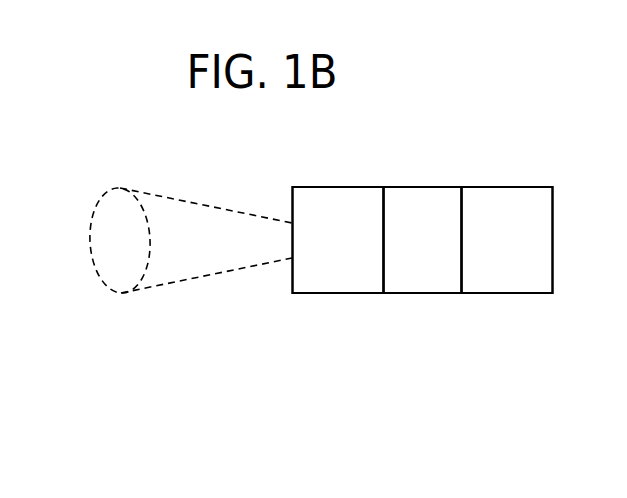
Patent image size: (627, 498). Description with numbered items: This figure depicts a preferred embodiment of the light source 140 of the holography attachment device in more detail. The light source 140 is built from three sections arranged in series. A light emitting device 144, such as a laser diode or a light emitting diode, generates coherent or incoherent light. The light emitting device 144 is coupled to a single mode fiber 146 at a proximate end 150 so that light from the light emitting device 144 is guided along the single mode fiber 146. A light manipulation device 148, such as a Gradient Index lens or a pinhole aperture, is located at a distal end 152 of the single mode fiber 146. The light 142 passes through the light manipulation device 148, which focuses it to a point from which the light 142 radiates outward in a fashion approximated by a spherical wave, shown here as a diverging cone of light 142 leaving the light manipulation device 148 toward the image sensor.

The light source 140 is at (503, 160).
The light 142 is at (203, 233).
The light emitting device 144 is at (512, 253).
The single mode fiber 146 is at (423, 260).
The light manipulation device 148 is at (338, 255).
The proximate end 150 is at (460, 205).
The distal end 152 is at (386, 203).